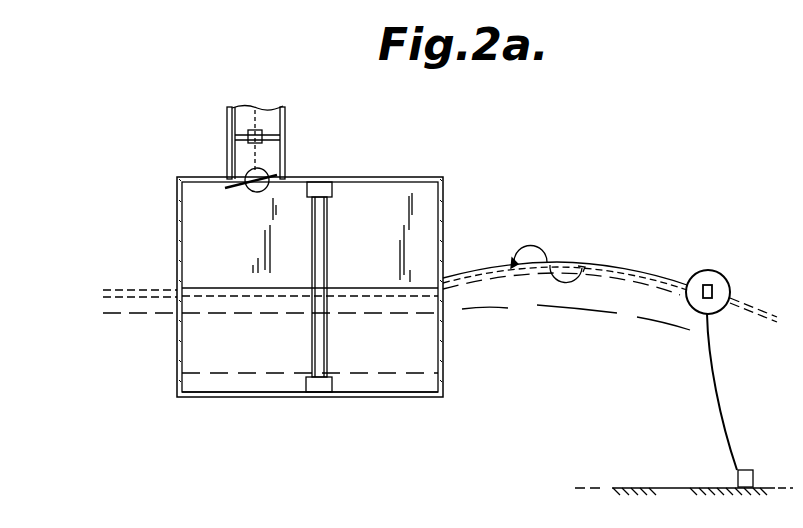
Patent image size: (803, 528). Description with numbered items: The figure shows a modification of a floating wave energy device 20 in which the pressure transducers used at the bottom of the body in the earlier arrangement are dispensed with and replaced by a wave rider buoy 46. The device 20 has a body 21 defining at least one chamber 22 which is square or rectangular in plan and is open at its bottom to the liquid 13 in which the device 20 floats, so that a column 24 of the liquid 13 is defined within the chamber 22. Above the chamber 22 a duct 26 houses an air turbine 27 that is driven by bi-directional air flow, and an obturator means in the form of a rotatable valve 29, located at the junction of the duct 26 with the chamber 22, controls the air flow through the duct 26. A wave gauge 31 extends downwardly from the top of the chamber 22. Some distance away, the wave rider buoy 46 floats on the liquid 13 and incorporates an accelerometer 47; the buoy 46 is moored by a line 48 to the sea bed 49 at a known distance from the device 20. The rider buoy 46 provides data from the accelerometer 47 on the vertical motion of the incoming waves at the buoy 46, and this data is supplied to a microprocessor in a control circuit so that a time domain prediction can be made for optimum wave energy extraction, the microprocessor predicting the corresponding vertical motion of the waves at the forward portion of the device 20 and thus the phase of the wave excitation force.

The liquid 13 is at (152, 300).
The device 20 is at (447, 167).
The body 21 is at (445, 203).
The chamber 22 is at (387, 210).
The column 24 is at (260, 358).
The duct 26 is at (287, 135).
The air turbine 27 is at (248, 125).
The rotatable valve 29 is at (248, 165).
The wave gauge 31 is at (330, 362).
The wave rider buoy 46 is at (717, 270).
The accelerometer 47 is at (698, 288).
The line 48 is at (710, 388).
The sea bed 49 is at (627, 487).